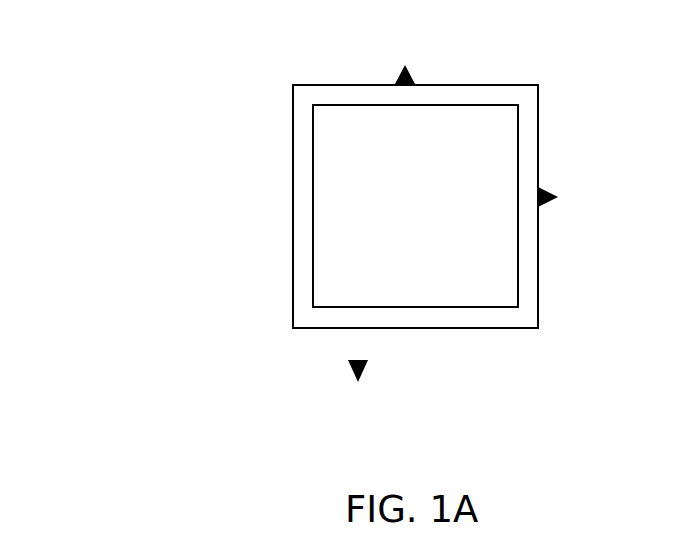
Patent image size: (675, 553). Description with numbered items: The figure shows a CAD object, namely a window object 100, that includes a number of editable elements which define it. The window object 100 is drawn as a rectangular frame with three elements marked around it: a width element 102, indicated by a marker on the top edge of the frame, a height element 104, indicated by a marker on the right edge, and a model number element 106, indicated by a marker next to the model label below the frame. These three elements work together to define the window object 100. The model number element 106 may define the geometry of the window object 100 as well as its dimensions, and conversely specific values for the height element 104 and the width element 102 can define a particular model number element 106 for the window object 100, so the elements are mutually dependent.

The window object 100 is at (117, 96).
The width element 102 is at (395, 75).
The height element 104 is at (548, 203).
The model number element 106 is at (366, 377).